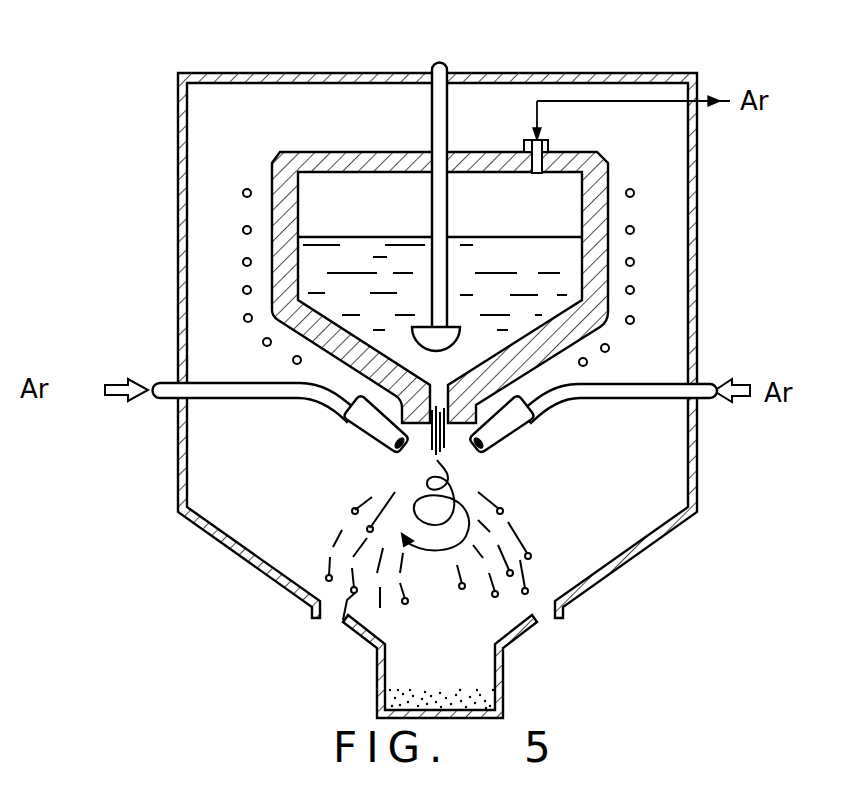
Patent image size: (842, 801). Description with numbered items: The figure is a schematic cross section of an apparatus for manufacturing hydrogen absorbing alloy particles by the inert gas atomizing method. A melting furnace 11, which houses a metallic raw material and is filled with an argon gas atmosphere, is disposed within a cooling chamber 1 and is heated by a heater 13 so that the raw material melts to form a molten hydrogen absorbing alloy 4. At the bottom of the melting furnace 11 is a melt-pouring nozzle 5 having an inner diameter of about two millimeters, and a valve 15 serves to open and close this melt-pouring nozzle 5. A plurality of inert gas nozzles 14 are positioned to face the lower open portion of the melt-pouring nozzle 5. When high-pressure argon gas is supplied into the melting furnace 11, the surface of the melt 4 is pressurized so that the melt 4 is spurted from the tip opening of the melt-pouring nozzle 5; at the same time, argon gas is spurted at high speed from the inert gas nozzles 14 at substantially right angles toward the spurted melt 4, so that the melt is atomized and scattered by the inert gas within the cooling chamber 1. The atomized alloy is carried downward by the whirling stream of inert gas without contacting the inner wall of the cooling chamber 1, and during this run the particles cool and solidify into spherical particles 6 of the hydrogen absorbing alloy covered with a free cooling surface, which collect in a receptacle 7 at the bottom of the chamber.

The cooling chamber 1 is at (697, 233).
The molten hydrogen absorbing alloy 4 is at (573, 262).
The melt-pouring nozzle 5 is at (472, 410).
The spherical particles 6 is at (387, 702).
The collector 7 is at (505, 678).
The melting furnace 11 is at (270, 182).
The heater 13 is at (634, 191).
The inert gas nozzle 14 is at (377, 448).
The valve 15 is at (447, 120).